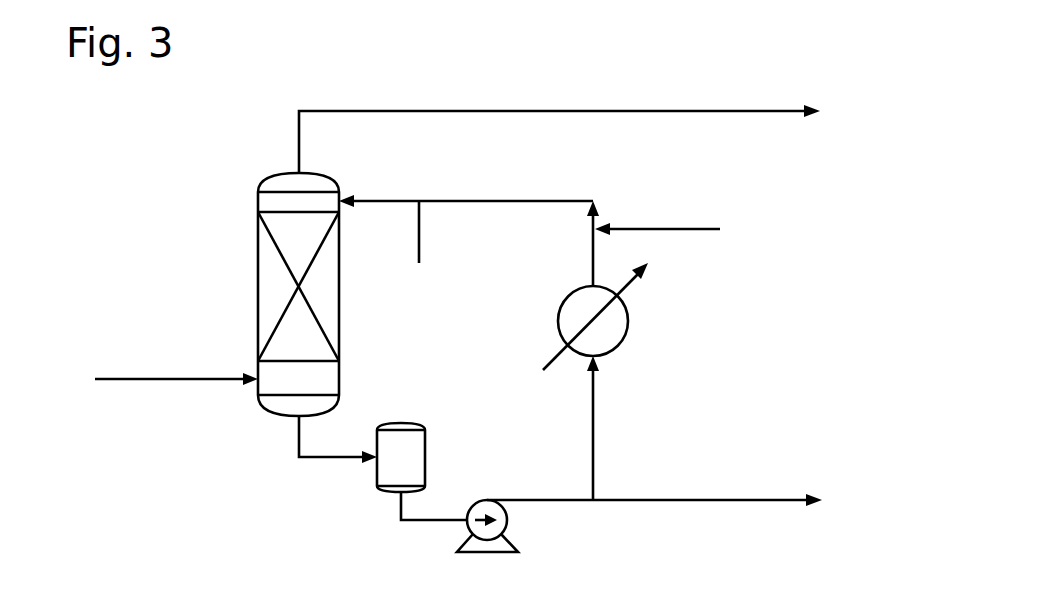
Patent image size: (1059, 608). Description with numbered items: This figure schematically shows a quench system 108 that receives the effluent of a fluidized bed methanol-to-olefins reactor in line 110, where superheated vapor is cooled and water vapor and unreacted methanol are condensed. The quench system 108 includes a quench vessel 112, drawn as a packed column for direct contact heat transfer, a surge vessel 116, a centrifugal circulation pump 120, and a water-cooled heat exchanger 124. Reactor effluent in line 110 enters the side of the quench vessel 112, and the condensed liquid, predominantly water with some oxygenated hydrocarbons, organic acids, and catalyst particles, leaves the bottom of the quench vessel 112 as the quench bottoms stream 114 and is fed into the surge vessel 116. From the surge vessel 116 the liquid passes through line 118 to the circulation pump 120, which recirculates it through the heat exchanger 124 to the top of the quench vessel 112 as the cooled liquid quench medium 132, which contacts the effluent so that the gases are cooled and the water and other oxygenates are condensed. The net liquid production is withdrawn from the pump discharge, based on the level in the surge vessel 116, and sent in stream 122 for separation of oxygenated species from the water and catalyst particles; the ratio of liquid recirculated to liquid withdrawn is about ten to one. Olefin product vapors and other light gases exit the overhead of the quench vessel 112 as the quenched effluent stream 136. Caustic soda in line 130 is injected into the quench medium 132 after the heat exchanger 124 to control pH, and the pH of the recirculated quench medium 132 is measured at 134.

The quench system 108 is at (434, 66).
The line 110 is at (167, 378).
The quench vessel 112 is at (258, 257).
The quench bottoms stream 114 is at (298, 441).
The surge vessel 116 is at (426, 453).
The pump suction line 118 is at (432, 522).
The centrifugal circulation pump 120 is at (508, 520).
The water and catalyst particles 122 is at (738, 498).
The heat exchanger 124 is at (628, 333).
The line 130 is at (692, 228).
The cooled liquid quench medium 132 is at (473, 200).
The pH measurement point 134 is at (420, 251).
The quenched effluent stream 136 is at (672, 110).